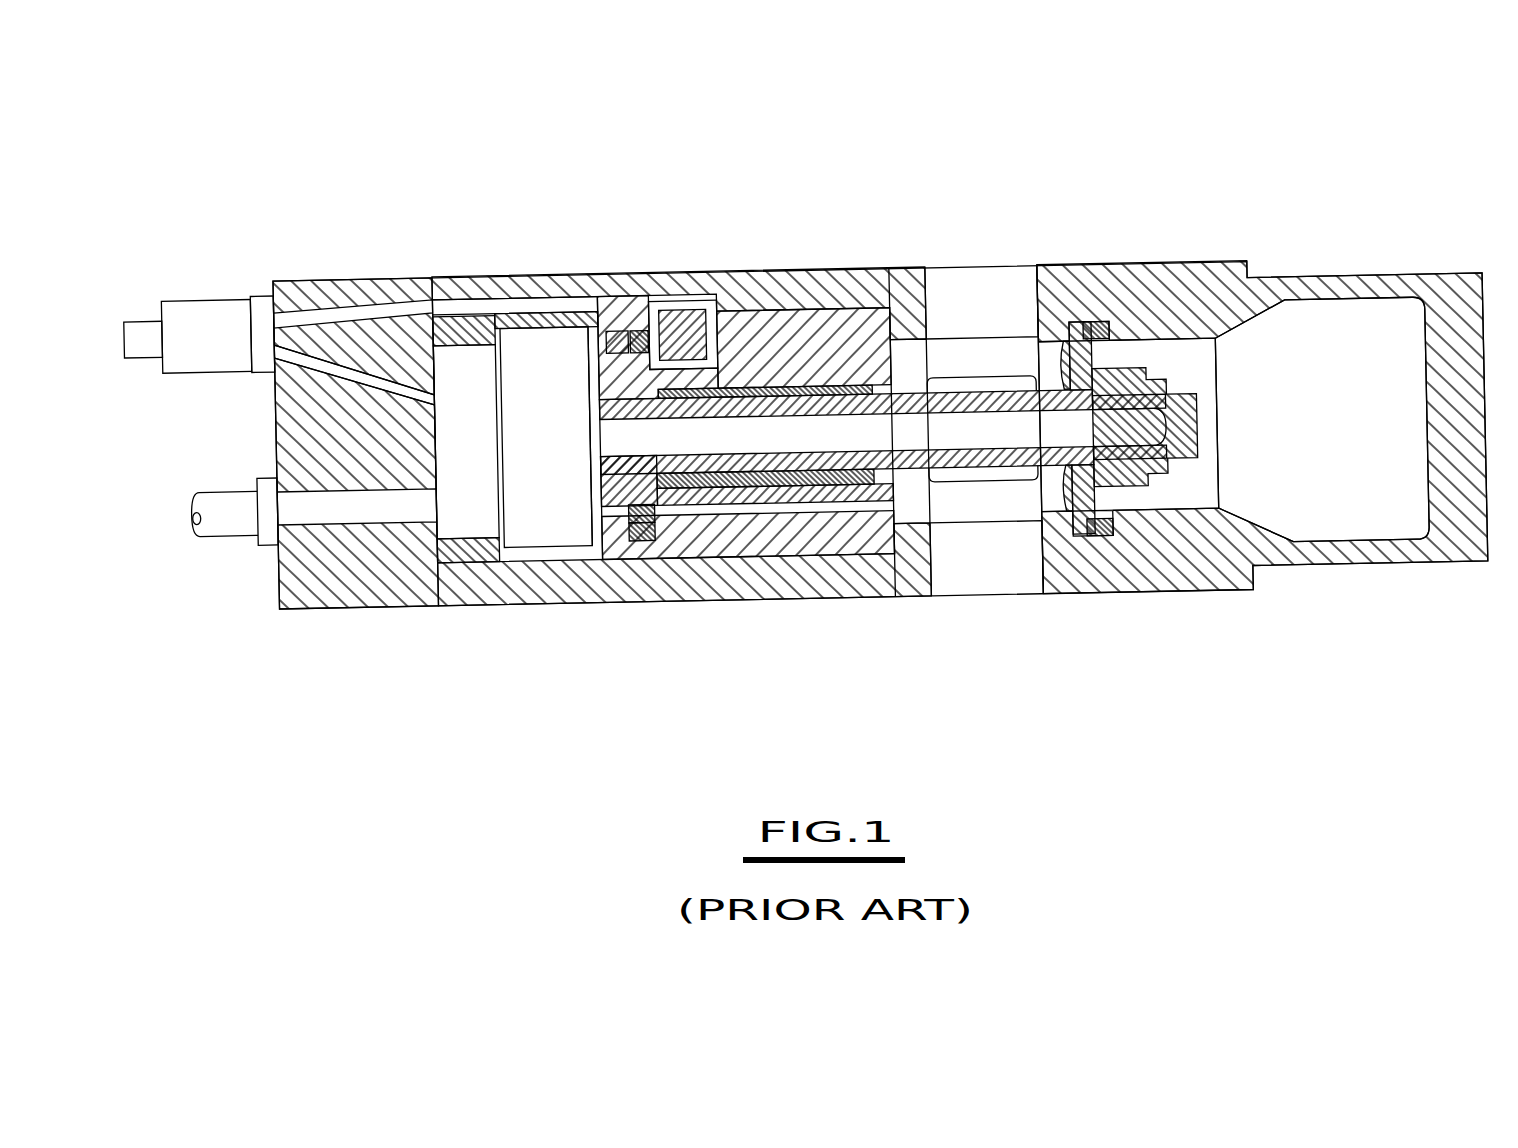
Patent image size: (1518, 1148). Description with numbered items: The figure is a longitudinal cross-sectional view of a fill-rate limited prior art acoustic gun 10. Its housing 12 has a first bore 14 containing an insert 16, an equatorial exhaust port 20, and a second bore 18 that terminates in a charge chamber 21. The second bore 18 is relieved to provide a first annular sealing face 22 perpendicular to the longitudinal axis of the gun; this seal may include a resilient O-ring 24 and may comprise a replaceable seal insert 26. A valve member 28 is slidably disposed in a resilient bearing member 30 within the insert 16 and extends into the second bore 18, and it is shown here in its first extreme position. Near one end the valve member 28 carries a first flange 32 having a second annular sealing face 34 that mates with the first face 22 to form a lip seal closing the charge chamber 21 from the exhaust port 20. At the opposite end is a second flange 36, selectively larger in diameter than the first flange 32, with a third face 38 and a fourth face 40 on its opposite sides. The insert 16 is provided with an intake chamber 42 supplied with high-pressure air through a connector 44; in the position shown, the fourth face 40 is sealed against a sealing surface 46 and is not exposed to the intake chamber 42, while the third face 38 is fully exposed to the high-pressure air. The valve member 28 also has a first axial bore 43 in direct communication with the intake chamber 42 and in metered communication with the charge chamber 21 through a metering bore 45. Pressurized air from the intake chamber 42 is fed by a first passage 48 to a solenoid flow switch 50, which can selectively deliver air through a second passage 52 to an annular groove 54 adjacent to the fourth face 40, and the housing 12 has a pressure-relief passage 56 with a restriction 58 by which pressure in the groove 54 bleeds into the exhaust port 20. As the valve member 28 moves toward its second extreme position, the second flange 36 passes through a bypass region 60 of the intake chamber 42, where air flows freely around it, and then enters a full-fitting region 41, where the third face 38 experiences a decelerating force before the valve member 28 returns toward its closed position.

The acoustic gun 10 is at (471, 150).
The housing 12 is at (818, 288).
The first bore 14 is at (886, 288).
The insert 16 is at (800, 340).
The second bore 18 is at (1188, 343).
The equatorial exhaust port 20 is at (940, 292).
The charge chamber 21 is at (1332, 443).
The first annular sealing face 22 is at (1110, 522).
The O-ring 24 is at (1093, 323).
The replaceable seal insert 26 is at (1038, 322).
The valve member 28 is at (985, 388).
The resilient bearing member 30 is at (818, 484).
The first flange 32 is at (1077, 507).
The second annular sealing face 34 is at (1093, 360).
The second flange 36 is at (630, 523).
The third face 38 is at (620, 342).
The fourth face 40 is at (652, 528).
The full-fitting region 41 is at (472, 522).
The intake chamber 42 is at (522, 469).
The first axial bore 43 is at (790, 449).
The connector 44 is at (268, 520).
The metering bore 45 is at (1195, 430).
The sealing surface 46 is at (630, 348).
The first passage 48 is at (338, 368).
The solenoid flow switch 50 is at (190, 298).
The second passage 52 is at (523, 297).
The annular groove 54 is at (673, 337).
The pressure-relief passage 56 is at (757, 510).
The restriction 58 is at (660, 503).
The bypass region 60 is at (540, 348).